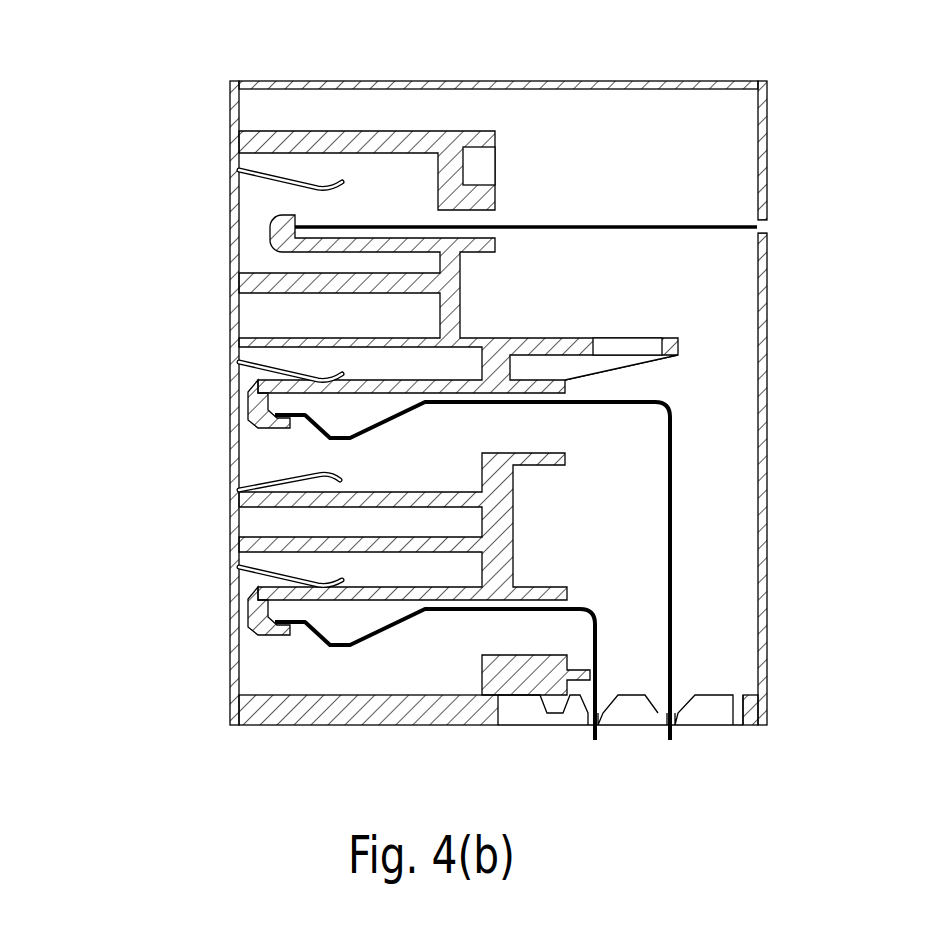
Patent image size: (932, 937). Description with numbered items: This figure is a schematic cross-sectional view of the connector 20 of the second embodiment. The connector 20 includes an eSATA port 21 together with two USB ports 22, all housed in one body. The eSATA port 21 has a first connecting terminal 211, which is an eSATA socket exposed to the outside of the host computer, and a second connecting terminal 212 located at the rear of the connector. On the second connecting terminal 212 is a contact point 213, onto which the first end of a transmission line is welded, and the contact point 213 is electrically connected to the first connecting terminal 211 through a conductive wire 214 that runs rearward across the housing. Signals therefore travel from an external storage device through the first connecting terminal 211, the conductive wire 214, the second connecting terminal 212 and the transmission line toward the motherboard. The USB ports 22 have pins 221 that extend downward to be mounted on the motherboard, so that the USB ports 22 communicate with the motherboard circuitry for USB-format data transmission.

The connector 20 is at (930, 52).
The eSATA port 21 is at (229, 226).
The first connecting terminal 211 is at (232, 169).
The second connecting terminal 212 is at (767, 197).
The contact point 213 is at (770, 223).
The conductive wire 214 is at (565, 223).
The USB port 22 is at (228, 433).
The pin 221 is at (672, 575).